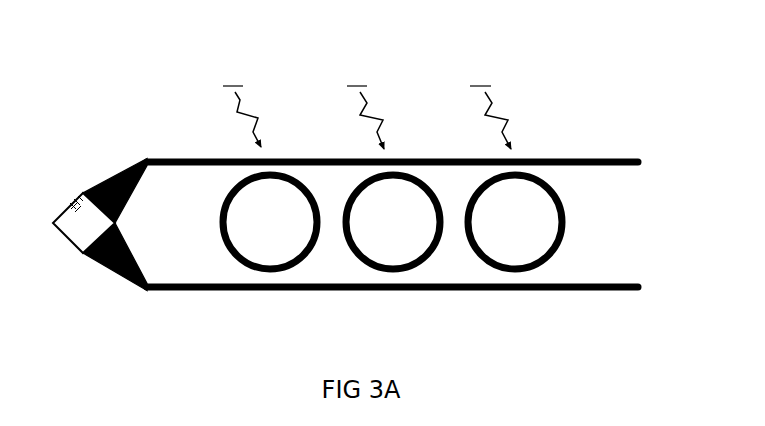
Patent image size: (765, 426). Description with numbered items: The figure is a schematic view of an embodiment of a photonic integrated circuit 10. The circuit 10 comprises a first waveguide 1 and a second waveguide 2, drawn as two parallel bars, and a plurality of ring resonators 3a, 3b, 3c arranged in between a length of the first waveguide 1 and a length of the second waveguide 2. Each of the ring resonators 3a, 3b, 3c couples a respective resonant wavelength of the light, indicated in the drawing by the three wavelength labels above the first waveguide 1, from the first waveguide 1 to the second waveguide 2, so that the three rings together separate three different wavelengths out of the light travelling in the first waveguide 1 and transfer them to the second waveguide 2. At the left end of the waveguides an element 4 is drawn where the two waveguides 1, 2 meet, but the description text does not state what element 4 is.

The photonic integrated circuit 10 is at (86, 40).
The first waveguide 1 is at (180, 142).
The second waveguide 2 is at (190, 301).
The ring resonator 3a is at (259, 232).
The ring resonator 3b is at (382, 232).
The ring resonator 3c is at (504, 232).
The optical coupler / input element 4 is at (71, 196).